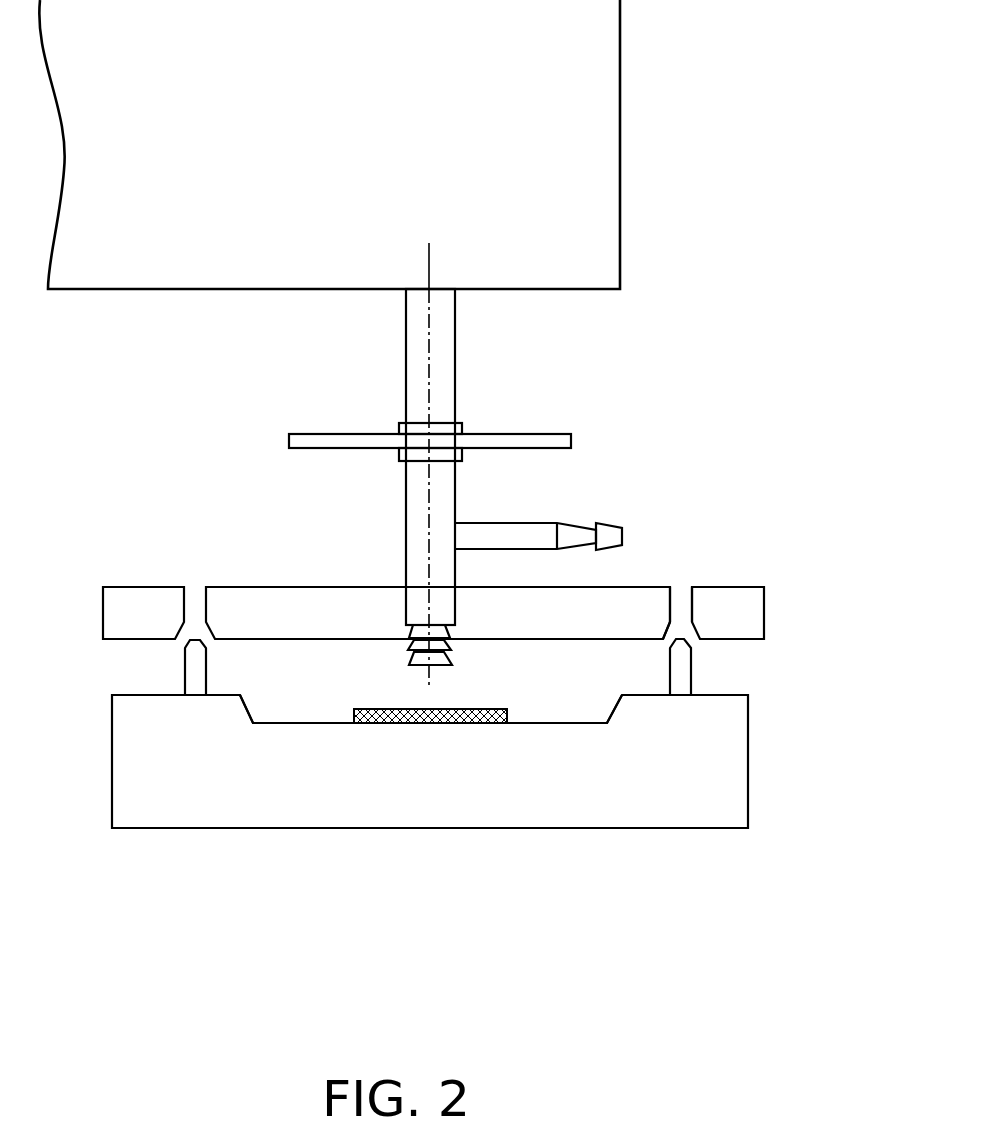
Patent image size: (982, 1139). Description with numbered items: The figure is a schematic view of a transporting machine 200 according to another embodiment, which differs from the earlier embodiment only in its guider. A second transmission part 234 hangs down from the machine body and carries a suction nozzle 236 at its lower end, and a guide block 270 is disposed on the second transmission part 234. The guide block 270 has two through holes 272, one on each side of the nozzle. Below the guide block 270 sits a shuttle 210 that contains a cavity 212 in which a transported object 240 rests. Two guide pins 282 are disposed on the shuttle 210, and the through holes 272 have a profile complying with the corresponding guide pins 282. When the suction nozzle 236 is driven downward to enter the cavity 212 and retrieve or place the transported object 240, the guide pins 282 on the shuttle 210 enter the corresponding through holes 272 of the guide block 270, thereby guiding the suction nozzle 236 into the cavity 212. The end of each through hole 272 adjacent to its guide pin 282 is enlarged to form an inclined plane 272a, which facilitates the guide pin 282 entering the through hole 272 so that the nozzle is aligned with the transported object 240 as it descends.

The transporting machine 200 is at (765, 952).
The shuttle 210 is at (728, 753).
The cavity 212 is at (530, 711).
The second transmission part 234 is at (376, 492).
The suction nozzle 236 is at (408, 643).
The transported object 240 is at (460, 709).
The guide block 270 is at (757, 613).
The through hole 272 is at (679, 592).
The inclined plane 272a is at (667, 634).
The guide pin 282 is at (686, 675).